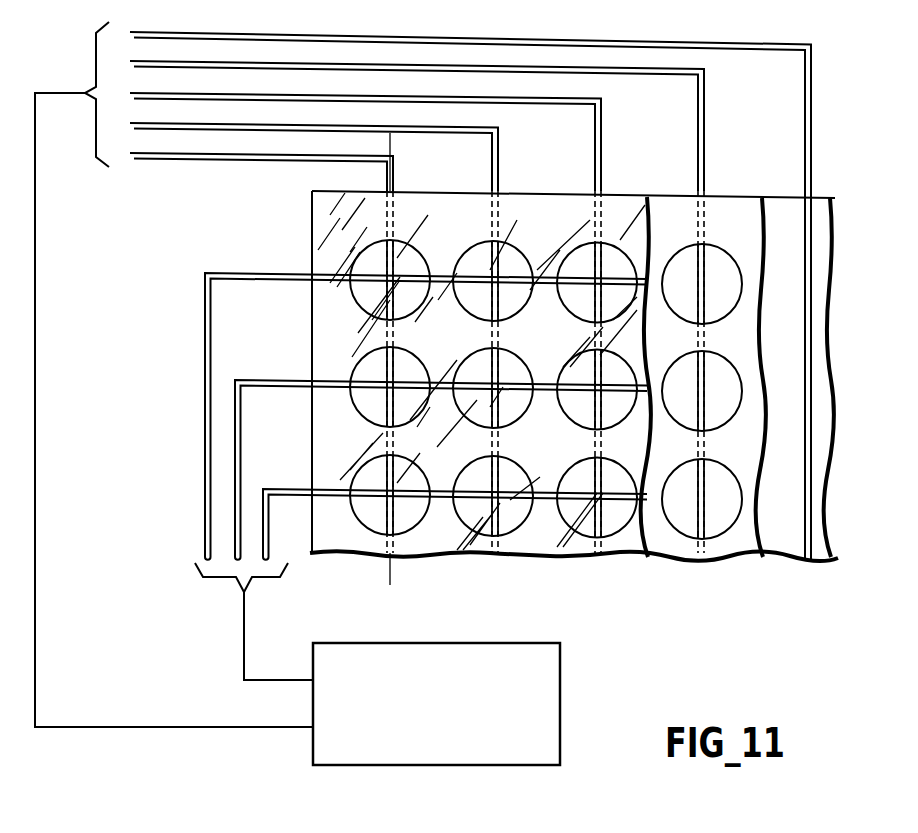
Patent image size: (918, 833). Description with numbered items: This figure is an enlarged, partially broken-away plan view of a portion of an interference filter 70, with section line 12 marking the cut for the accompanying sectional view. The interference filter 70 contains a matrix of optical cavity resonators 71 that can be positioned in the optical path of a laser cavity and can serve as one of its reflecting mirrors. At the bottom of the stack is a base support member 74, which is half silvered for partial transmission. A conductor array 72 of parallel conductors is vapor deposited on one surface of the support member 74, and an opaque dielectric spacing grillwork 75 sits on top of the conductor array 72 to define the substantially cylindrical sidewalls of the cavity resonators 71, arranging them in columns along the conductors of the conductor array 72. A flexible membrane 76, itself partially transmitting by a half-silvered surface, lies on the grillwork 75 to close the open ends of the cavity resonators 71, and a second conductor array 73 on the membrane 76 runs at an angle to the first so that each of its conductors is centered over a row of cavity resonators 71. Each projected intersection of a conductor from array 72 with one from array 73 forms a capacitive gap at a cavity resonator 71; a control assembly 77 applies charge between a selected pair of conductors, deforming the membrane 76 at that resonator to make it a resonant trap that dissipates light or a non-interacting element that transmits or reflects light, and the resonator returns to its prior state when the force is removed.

The interference filter 70 is at (824, 633).
The optical cavity resonators 71 is at (718, 413).
The conductor array 72 is at (816, 84).
The conductor array 73 is at (200, 353).
The base support member 74 is at (790, 549).
The dielectric spacing grillwork 75 is at (680, 546).
The flexible membrane 76 is at (530, 541).
The control assembly 77 is at (540, 687).
The section line 12- 12 is at (365, 568).